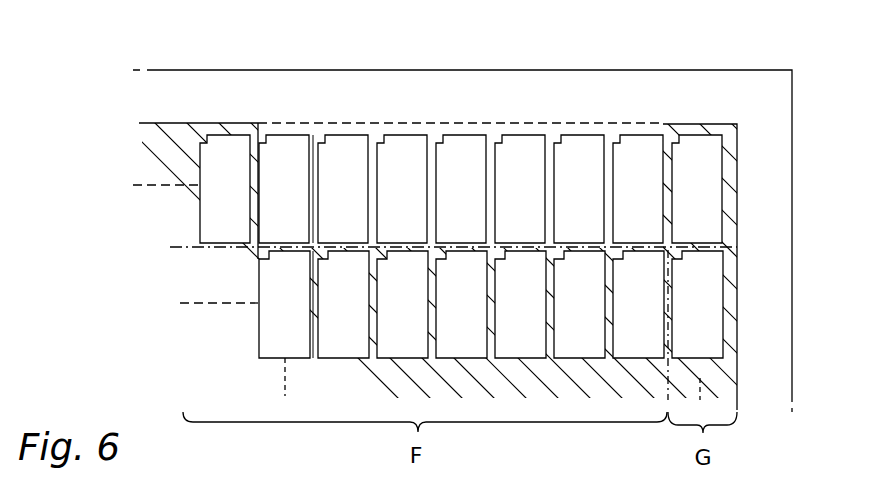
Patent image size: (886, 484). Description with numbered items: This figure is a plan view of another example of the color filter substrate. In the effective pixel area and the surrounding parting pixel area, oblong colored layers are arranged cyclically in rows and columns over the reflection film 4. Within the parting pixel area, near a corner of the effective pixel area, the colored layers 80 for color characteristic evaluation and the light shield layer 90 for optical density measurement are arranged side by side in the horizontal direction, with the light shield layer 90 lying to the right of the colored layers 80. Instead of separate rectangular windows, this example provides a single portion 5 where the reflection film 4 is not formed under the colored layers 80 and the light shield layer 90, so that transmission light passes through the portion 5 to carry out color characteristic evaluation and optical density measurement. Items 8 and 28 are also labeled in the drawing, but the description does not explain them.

The reflection film 4 is at (660, 382).
The portion where the reflection film is not formed 5 is at (315, 132).
The frame 8 is at (797, 206).
The hatched block 28 is at (252, 322).
The colored layers for color characteristic evaluation 80 is at (258, 113).
The light shield layer for optical density measurement 90 is at (648, 142).